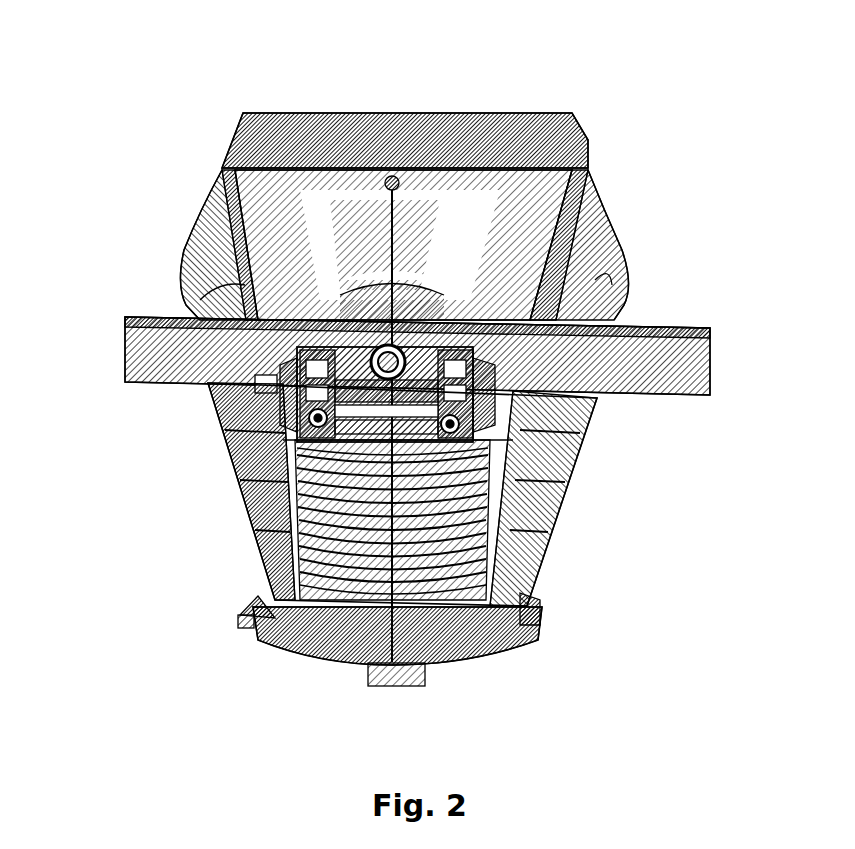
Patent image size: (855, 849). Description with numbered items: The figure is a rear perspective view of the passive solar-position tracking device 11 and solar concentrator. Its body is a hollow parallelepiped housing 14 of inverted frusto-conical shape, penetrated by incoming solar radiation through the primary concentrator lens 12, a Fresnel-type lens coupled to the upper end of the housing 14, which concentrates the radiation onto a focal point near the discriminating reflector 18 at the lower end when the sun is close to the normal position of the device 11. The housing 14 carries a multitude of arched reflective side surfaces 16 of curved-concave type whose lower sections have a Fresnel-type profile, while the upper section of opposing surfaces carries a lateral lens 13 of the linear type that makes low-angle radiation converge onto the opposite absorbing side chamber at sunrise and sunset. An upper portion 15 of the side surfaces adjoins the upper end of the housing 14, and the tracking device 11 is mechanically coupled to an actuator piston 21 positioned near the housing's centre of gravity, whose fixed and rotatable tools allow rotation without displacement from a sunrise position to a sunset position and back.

The passive solar-position tracking device 11 is at (172, 173).
The primary concentrator lens 12 is at (508, 150).
The lateral lens 13 is at (587, 243).
The parallelepiped housing 14 is at (600, 528).
The upper portion 15 is at (313, 252).
The arched reflective side surfaces 16 is at (345, 502).
The discriminating reflector 18 is at (328, 640).
The actuator piston 21 is at (265, 371).